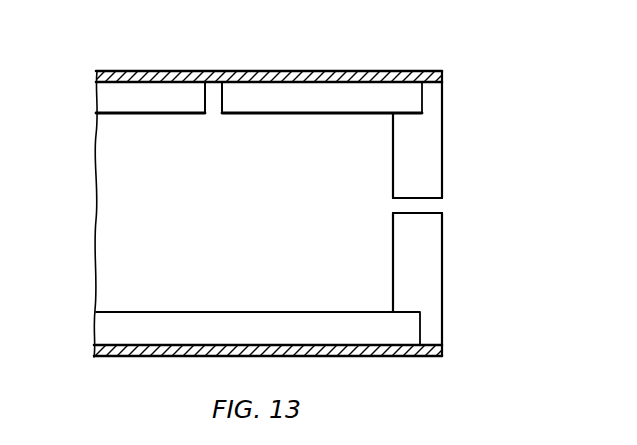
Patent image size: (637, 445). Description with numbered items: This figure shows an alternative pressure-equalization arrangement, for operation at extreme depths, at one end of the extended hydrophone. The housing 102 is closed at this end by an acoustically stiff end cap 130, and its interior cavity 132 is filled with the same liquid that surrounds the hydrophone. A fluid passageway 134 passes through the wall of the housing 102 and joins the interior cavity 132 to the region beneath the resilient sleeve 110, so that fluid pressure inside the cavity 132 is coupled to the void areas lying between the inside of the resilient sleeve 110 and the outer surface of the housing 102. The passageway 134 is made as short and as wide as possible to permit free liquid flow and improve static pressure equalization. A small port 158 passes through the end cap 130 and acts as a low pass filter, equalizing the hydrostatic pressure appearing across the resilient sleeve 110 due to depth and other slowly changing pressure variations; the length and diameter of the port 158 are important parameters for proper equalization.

The housing 102 is at (300, 90).
The resilient sleeve 110 is at (413, 70).
The end cap 130 is at (433, 140).
The interior cavity 132 is at (271, 225).
The fluid passageway 134 is at (213, 112).
The port 158 is at (437, 207).